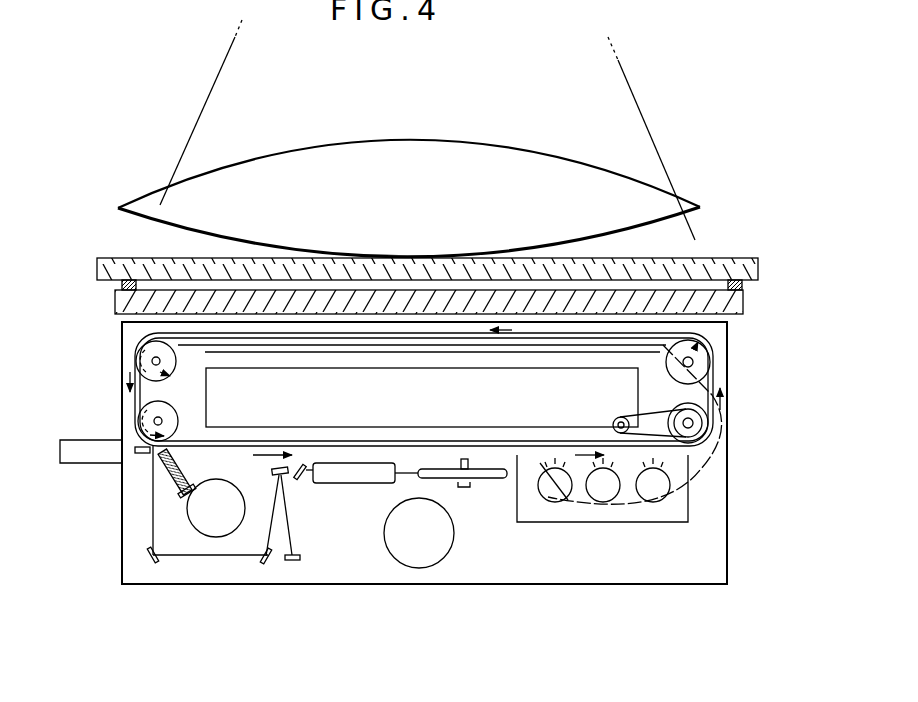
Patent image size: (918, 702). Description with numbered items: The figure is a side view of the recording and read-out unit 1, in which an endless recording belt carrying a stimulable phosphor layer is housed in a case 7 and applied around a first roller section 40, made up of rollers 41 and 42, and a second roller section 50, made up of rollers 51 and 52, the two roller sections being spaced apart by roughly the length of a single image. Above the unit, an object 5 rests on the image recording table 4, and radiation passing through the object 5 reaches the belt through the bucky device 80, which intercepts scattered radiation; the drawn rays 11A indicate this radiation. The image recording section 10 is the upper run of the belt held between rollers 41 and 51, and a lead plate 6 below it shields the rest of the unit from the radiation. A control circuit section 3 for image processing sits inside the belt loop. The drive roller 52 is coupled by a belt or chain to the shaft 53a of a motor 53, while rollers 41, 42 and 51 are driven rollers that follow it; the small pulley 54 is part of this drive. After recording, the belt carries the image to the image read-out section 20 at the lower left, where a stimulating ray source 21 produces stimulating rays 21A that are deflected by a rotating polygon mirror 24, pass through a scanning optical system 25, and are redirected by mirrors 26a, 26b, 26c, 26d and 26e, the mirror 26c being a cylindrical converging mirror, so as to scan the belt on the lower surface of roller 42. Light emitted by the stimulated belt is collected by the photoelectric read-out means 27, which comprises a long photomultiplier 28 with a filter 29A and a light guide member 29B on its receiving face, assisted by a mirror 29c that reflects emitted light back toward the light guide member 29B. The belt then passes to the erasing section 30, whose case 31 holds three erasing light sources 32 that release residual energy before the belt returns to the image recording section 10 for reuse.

The recording and read-out unit 1 is at (443, 394).
The control circuit section 3 is at (462, 407).
The image recording table 4 is at (722, 252).
The object 5 is at (524, 150).
The lead plate 6 is at (474, 370).
The case 7 is at (727, 548).
The image recording section 10 is at (420, 324).
The light rays 11A is at (656, 140).
The image read-out section 20 is at (282, 522).
The stimulating ray source 21 is at (440, 548).
The stimulating rays 21A is at (408, 446).
The rotating polygon mirror 24 is at (480, 484).
The scanning optical system 25 is at (334, 484).
The mirror 26a is at (305, 466).
The mirror 26b is at (300, 565).
The cylindrical mirror 26c is at (271, 471).
The mirror 26d is at (268, 565).
The mirror 26e is at (150, 565).
The photoelectric read-out means 27 is at (170, 500).
The photomultiplier 28 is at (218, 545).
The filter 29A is at (222, 462).
The light guide member 29B is at (193, 446).
The mirror 29c is at (141, 457).
The erasing section 30 is at (606, 511).
The case 31 is at (666, 526).
The erasing light sources 32 is at (553, 504).
The first roller section 40 is at (150, 390).
The roller 41 is at (137, 354).
The roller 42 is at (140, 420).
The second roller section 50 is at (429, 332).
The roller 51 is at (726, 344).
The drive roller 52 is at (712, 426).
The motor 53 is at (700, 460).
The shaft 53a is at (614, 421).
The pulley 54 is at (650, 412).
The bucky device 80 is at (748, 296).